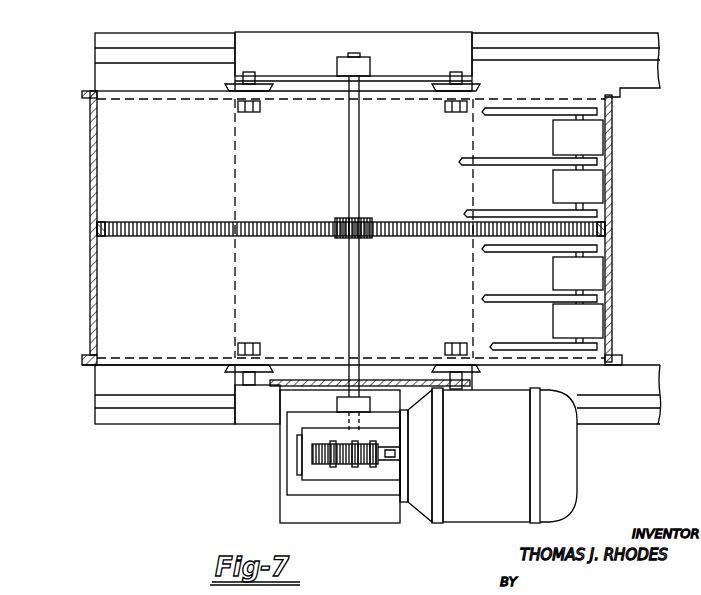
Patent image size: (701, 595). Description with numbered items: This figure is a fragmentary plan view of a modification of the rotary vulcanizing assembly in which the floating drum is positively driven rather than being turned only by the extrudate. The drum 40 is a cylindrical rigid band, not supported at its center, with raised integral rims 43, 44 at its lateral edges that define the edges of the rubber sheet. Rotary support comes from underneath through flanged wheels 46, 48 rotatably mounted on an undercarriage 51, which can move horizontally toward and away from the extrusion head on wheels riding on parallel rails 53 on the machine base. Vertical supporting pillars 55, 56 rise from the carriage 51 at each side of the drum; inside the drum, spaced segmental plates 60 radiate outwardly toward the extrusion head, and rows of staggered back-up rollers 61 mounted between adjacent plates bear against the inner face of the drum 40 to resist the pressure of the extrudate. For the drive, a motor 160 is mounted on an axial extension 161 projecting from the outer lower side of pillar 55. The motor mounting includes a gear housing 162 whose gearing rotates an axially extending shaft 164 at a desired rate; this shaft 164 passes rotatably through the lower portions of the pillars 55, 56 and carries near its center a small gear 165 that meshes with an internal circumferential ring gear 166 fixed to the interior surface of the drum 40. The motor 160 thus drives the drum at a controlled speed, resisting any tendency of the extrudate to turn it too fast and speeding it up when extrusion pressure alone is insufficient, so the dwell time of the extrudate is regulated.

The drum 40 is at (88, 166).
The rim 43 is at (85, 366).
The rim 44 is at (85, 92).
The flanged wheel 46 is at (228, 370).
The flanged wheel 48 is at (230, 87).
The undercarriage 51 is at (240, 426).
The rails 53 is at (116, 409).
The supporting pillar 55 is at (272, 388).
The supporting pillar 56 is at (297, 78).
The segmental plates 60 is at (512, 161).
The back-up rollers 61 is at (600, 181).
The motor 160 is at (568, 432).
The axial extension 161 is at (282, 505).
The gear housing 162 is at (302, 462).
The axial shaft 164 is at (361, 320).
The small gear 165 is at (336, 240).
The ring gear 166 is at (167, 216).